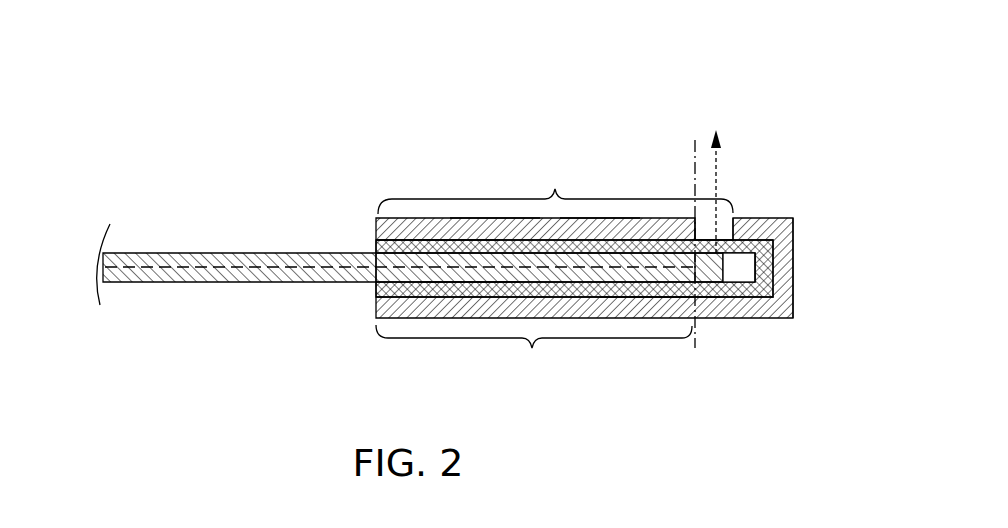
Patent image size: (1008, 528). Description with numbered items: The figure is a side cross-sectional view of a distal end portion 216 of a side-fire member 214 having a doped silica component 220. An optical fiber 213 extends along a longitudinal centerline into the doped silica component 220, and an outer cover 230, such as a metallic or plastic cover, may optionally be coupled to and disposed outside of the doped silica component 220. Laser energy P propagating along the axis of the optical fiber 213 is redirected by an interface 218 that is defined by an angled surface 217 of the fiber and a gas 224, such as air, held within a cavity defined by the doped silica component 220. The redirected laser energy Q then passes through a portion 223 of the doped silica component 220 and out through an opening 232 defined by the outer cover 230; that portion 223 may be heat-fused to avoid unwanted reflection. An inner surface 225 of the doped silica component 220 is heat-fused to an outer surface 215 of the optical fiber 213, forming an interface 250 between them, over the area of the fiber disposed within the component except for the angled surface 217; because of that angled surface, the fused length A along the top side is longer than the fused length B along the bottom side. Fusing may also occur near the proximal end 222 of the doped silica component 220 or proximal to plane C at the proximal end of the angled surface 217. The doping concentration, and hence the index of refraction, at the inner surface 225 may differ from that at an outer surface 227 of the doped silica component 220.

The optical fiber 213 is at (313, 284).
The side-fire member 214 is at (614, 222).
The outer surface of the optical fiber 215 is at (420, 279).
The distal end portion 216 is at (597, 151).
The angled surface 217 is at (710, 276).
The interface 218 is at (731, 267).
The doped silica component 220 is at (665, 287).
The proximal end of the doped silica component 222 is at (387, 189).
The portion of the doped silica component 223 is at (699, 281).
The gas 224 is at (751, 264).
The inner surface of the doped silica component 225 is at (463, 275).
The outer surface of the doped silica component 227 is at (494, 234).
The outer cover 230 is at (782, 303).
The opening 232 is at (728, 227).
The interface 250 is at (496, 263).